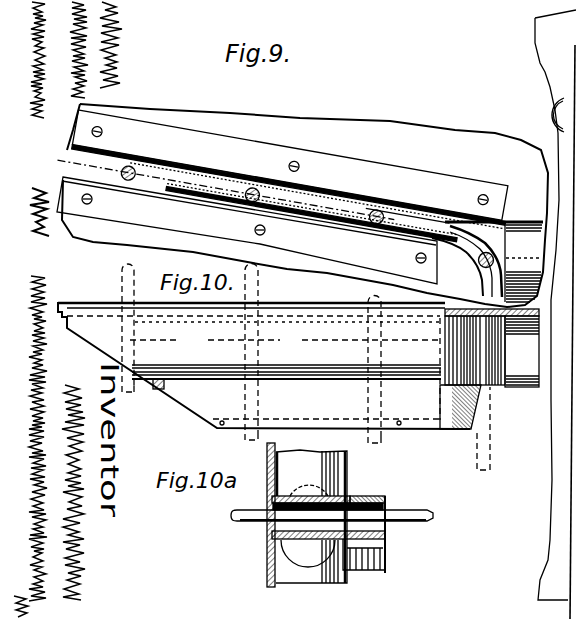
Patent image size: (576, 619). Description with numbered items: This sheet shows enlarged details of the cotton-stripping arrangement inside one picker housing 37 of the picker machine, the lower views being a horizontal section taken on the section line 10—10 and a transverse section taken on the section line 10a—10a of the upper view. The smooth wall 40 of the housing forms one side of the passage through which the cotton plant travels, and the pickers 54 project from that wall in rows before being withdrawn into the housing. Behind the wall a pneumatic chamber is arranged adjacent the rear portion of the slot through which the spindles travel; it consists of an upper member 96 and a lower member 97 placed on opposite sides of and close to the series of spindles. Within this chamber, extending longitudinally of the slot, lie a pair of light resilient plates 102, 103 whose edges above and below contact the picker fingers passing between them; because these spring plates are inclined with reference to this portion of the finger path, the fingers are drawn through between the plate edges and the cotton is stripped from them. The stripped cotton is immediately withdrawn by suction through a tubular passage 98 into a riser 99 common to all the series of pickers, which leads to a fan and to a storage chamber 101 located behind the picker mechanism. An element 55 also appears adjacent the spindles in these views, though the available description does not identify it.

In FIG. 9, the section line 10— 10 is at (113, 167).
In FIG. 9, the section line 10a— 10a is at (435, 193).
In FIG. 9, the housing 37 is at (543, 70).
In FIG. 9, the smooth adjacent wall 40 is at (409, 124).
In FIG. 10, the smooth adjacent wall 40 is at (303, 306).
In FIG. 9, the picker 54 is at (358, 211).
In FIG. 10, the picker 54 is at (505, 441).
In FIG. 10A, the picker 54 is at (245, 522).
In FIG. 9, the plate 55 is at (148, 172).
In FIG. 10, the plate 55 is at (290, 322).
In FIG. 10A, the plate 55 is at (265, 527).
In FIG. 9, the upper member of pneumatic chamber 96 is at (356, 194).
In FIG. 10A, the upper member of pneumatic chamber 96 is at (386, 500).
In FIG. 9, the lower member of pneumatic chamber 97 is at (145, 198).
In FIG. 10, the lower member of pneumatic chamber 97 is at (160, 385).
In FIG. 10A, the lower member of pneumatic chamber 97 is at (384, 545).
In FIG. 9, the tubular passage 98 is at (487, 262).
In FIG. 10, the tubular passage 98 is at (492, 348).
In FIG. 10A, the tubular passage 98 is at (342, 487).
In FIG. 10A, the riser 99 is at (311, 516).
In FIG. 10, the storage chamber 101 is at (492, 378).
In FIG. 10A, the storage chamber 101 is at (277, 500).
In FIG. 9, the resilient plate 102 is at (196, 174).
In FIG. 10A, the resilient plate 102 is at (367, 491).
In FIG. 9, the resilient plate 103 is at (197, 203).
In FIG. 10, the resilient plate 103 is at (286, 385).
In FIG. 10A, the resilient plate 103 is at (361, 546).